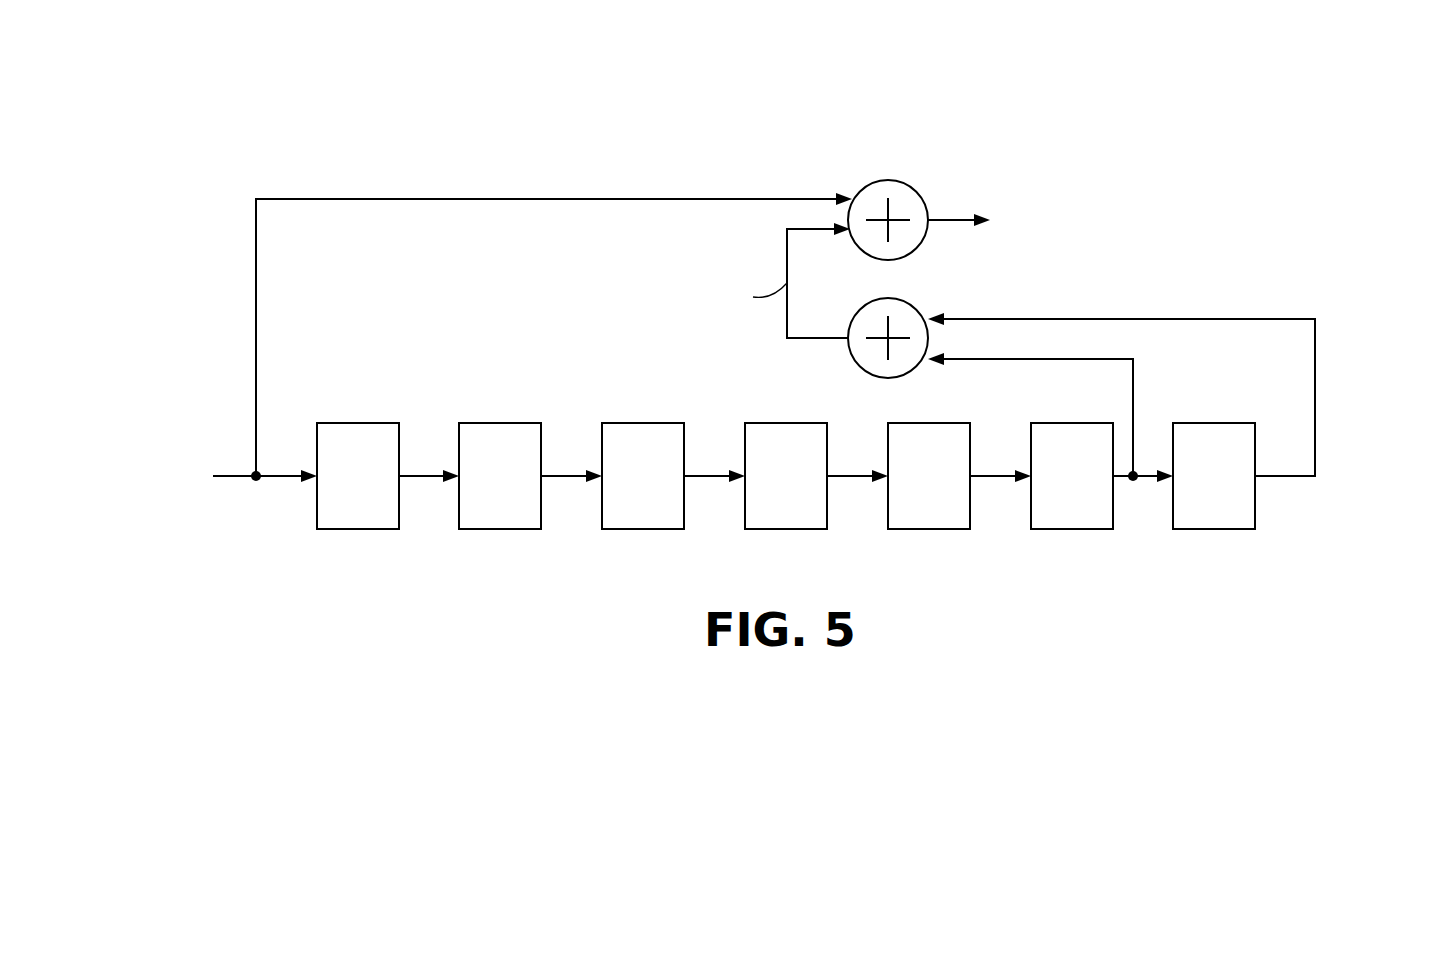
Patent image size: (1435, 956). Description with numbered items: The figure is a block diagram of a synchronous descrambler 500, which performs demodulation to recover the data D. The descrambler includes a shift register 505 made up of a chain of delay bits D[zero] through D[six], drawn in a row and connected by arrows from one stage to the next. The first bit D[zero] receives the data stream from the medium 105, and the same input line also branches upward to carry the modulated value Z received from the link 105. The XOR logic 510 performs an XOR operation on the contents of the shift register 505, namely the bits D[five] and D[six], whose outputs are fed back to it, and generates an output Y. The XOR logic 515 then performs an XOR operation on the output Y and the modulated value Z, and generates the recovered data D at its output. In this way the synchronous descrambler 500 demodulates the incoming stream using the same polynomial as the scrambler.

The synchronous descrambler 500 is at (780, 108).
The medium 105 is at (196, 470).
The shift register 505 is at (1292, 509).
The XOR logic 510 is at (857, 366).
The XOR logic 515 is at (911, 186).